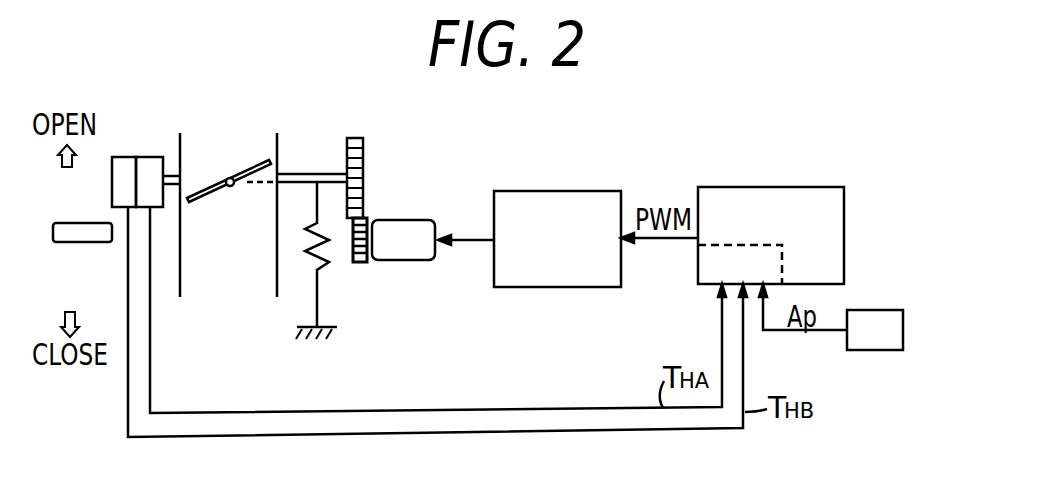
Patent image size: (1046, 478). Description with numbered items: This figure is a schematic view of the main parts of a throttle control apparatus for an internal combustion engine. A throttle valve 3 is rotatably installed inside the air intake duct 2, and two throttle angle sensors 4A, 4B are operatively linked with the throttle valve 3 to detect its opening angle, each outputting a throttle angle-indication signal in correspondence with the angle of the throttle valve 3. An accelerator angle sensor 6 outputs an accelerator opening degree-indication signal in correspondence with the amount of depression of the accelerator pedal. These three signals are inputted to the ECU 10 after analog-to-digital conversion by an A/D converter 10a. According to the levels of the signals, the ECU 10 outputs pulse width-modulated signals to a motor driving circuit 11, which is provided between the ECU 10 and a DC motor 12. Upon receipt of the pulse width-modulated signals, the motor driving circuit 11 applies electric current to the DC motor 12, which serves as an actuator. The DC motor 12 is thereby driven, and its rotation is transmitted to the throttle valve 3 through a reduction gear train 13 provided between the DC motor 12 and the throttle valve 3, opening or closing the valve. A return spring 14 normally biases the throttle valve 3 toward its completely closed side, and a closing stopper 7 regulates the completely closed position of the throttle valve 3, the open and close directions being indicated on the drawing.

The air intake duct 2 is at (277, 140).
The throttle valve 3 is at (210, 186).
The throttle angle sensor 4A is at (142, 157).
The throttle angle sensor 4B is at (128, 157).
The accelerator angle sensor 6 is at (847, 348).
The closing stopper 7 is at (83, 242).
The ECU 10 is at (752, 187).
The A/D converter 10a is at (702, 262).
The motor driving circuit 11 is at (537, 191).
The DC motor 12 is at (413, 262).
The reduction gear train 13 is at (363, 160).
The return spring 14 is at (325, 254).